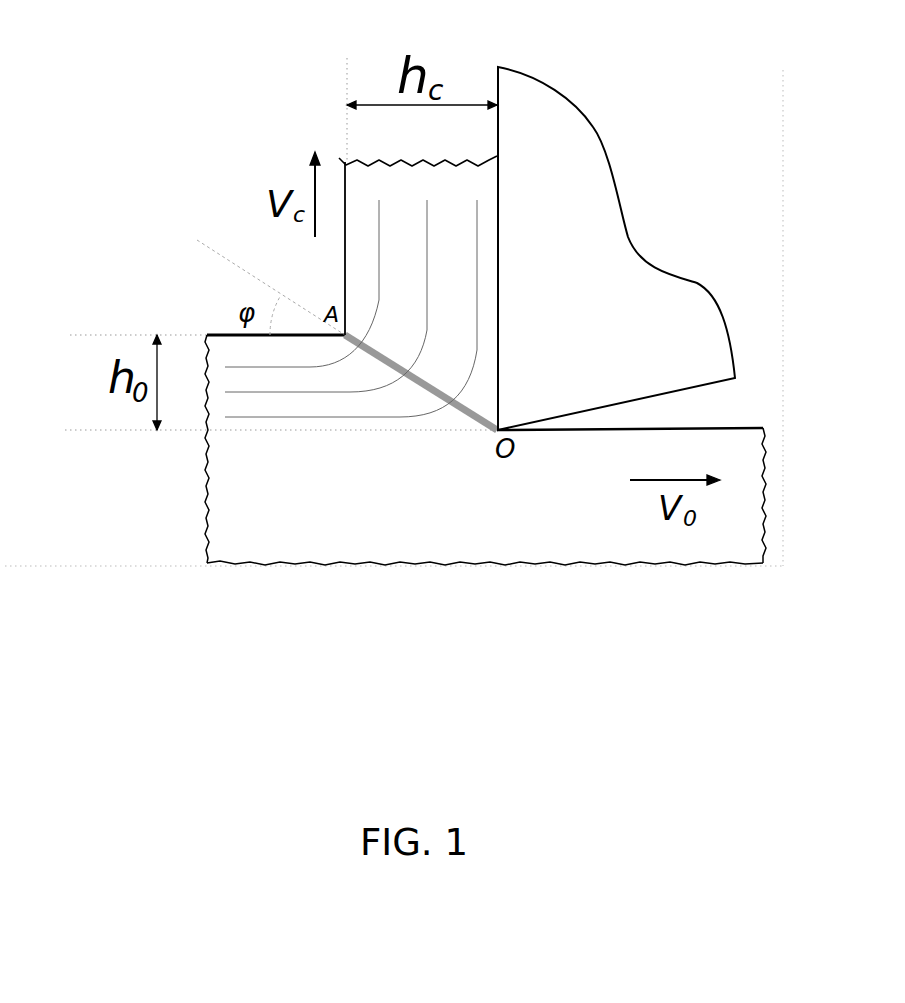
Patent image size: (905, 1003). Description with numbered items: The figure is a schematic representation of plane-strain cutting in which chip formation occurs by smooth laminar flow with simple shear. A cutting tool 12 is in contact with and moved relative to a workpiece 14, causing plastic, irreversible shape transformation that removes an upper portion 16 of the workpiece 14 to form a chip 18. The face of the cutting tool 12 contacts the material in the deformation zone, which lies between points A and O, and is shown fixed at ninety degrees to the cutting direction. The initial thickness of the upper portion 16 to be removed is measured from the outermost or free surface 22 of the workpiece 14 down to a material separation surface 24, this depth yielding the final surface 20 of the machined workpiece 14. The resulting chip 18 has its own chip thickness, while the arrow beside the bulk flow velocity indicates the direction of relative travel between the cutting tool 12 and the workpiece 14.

The cutting tool 12 is at (613, 260).
The workpiece 14 is at (320, 515).
The upper portion of the workpiece 16 is at (255, 400).
The chip 18 is at (375, 178).
The final surface 20 is at (733, 427).
The outermost surface 22 is at (218, 333).
The material separation surface 24 is at (332, 430).